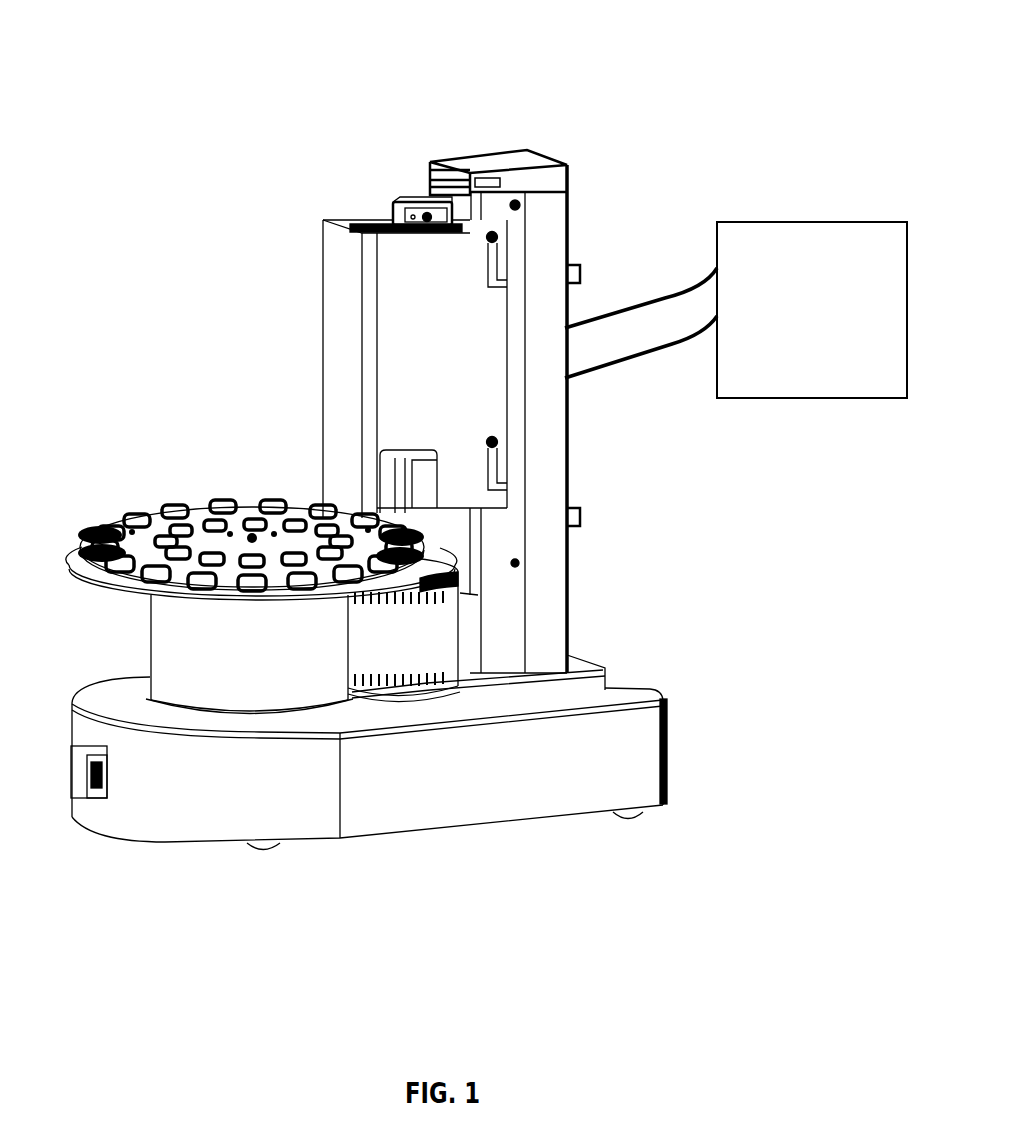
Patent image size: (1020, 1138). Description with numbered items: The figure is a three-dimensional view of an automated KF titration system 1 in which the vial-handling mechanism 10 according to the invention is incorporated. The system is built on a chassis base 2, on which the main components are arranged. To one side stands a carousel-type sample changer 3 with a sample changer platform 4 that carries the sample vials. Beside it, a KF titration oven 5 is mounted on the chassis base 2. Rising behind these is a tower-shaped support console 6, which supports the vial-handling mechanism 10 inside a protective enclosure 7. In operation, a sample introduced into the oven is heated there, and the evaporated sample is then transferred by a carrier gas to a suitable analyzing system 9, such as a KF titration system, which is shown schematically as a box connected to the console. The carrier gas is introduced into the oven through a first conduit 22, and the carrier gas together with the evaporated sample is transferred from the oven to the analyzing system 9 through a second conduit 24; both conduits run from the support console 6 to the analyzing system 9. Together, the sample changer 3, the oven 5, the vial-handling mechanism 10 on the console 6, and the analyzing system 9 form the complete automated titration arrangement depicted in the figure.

The automated KF titration system 1 is at (182, 211).
The chassis base 2 is at (237, 787).
The carousel-type sample changer 3 is at (187, 533).
The sample changer platform 4 is at (110, 588).
The KF titration oven 5 is at (413, 640).
The tower-shaped support console 6 is at (542, 437).
The protective enclosure 7 is at (350, 320).
The analyzing system 9 is at (782, 272).
The vial-handling mechanism 10 is at (388, 222).
The first conduit 22 is at (645, 300).
The second conduit 24 is at (680, 338).